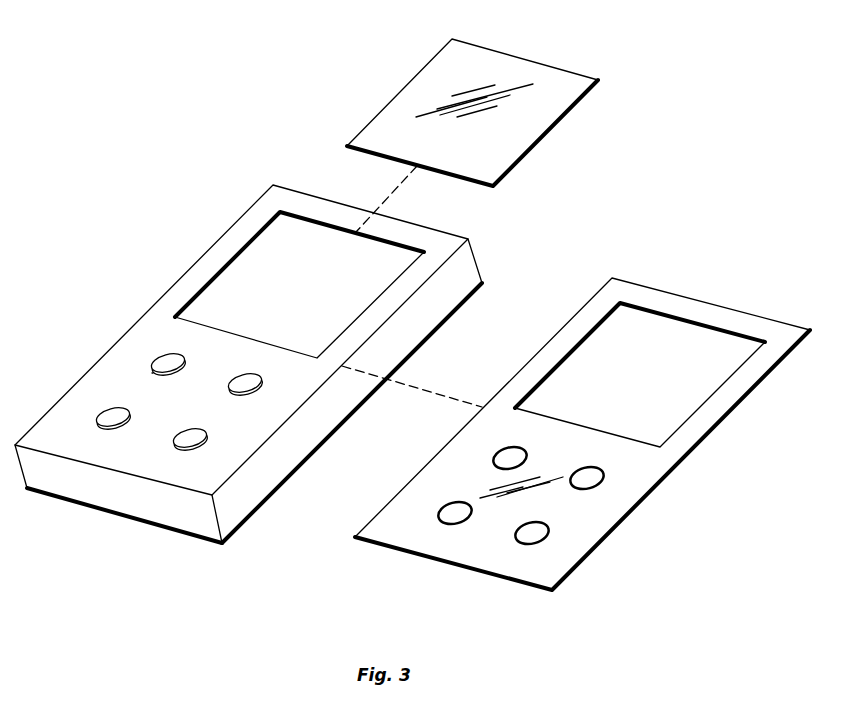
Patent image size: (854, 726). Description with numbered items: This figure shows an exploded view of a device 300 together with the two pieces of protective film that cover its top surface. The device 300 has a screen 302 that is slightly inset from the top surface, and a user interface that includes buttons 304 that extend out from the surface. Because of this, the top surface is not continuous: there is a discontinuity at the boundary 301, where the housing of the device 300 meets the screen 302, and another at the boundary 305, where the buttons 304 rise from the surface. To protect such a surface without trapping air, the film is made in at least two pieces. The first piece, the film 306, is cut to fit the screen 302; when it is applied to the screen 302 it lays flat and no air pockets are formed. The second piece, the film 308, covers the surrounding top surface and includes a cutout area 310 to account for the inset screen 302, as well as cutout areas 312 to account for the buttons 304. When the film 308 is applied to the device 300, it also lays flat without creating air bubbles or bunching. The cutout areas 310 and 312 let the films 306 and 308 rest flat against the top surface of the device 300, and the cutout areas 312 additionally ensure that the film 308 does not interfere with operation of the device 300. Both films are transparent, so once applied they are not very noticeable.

The device 300 is at (455, 233).
The boundary 301 is at (243, 247).
The screen 302 is at (303, 237).
The buttons 304 is at (152, 362).
The boundary 305 is at (228, 395).
The film 306 is at (510, 75).
The film 308 is at (690, 457).
The cutout area 310 is at (660, 328).
The cutout areas 312 is at (497, 458).